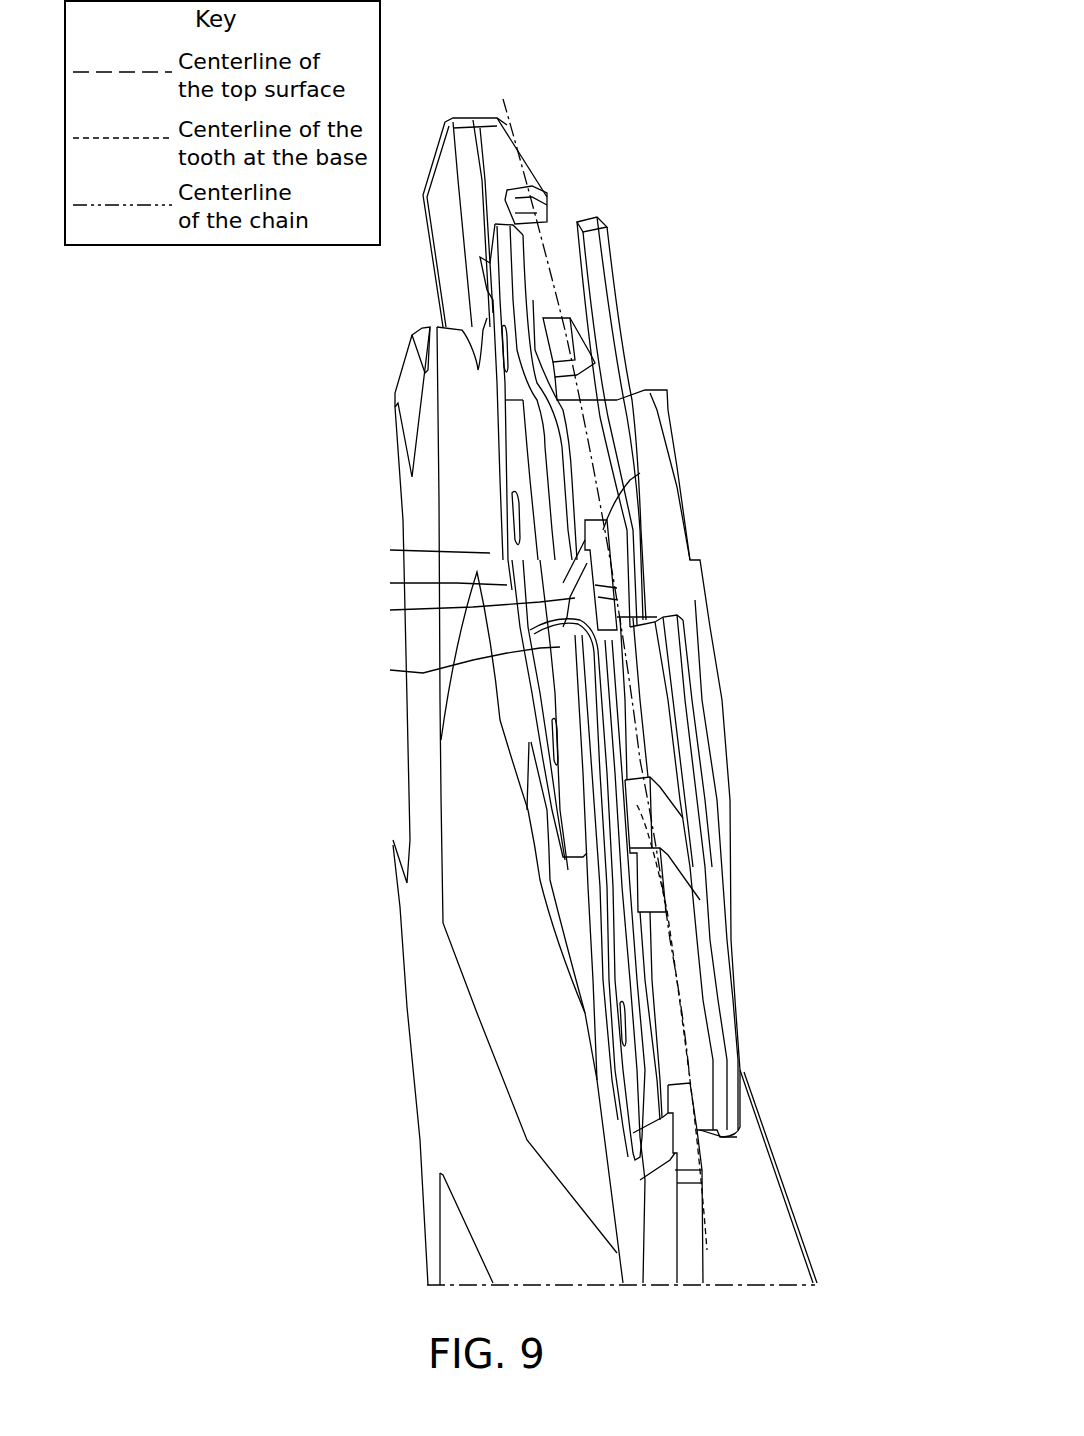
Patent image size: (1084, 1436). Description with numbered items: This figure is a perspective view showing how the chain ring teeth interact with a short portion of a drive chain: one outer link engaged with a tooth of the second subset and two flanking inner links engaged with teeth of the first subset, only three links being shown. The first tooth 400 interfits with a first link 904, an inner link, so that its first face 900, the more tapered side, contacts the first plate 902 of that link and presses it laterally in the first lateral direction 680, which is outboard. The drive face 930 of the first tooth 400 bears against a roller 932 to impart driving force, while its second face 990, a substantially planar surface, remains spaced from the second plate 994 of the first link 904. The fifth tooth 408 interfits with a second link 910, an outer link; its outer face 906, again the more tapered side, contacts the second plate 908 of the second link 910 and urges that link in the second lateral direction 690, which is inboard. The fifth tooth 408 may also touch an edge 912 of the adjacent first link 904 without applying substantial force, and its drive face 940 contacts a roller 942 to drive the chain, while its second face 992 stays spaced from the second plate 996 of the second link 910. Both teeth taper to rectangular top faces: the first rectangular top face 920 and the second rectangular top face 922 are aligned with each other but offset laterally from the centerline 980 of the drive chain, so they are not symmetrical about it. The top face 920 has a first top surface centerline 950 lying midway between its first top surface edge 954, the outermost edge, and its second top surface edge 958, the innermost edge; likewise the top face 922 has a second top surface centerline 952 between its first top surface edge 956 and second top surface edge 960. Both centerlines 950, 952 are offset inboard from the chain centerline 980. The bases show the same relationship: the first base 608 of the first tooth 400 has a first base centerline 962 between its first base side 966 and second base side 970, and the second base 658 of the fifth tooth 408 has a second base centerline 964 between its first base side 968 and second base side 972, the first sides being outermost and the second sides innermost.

The centerline of the drive chain 980 is at (515, 118).
The drive face of the fifth tooth 940 is at (603, 520).
The roller 942 is at (603, 425).
The second plate of the second link 996 is at (658, 420).
The second rectangular top face 922 is at (605, 517).
The first top surface edge 956 is at (613, 538).
The second face of the fifth tooth 992 is at (610, 530).
The fifth tooth 408 is at (625, 542).
The first base side 968 is at (625, 557).
The roller 932 is at (647, 667).
The drive face of the first tooth 930 is at (658, 774).
The first top surface edge 954 is at (660, 793).
The first tooth 400 is at (675, 820).
The first base side 966 is at (670, 855).
The first face of the first tooth 900 is at (663, 885).
The first base centerline 962 is at (605, 900).
The first plate of the first link 902 is at (717, 918).
The base of the first tooth 608 is at (680, 913).
The first link 904 is at (767, 996).
The first lateral direction 680 is at (940, 925).
The second lateral direction 690 is at (325, 925).
The second base centerline 964 is at (590, 520).
The second top surface centerline 952 is at (595, 550).
The second top surface edge 960 is at (597, 545).
The outer face of the fifth tooth 906 is at (567, 558).
The second base side 972 is at (560, 592).
The edge of the adjacent first link 912 is at (560, 600).
The second plate of the second link 908 is at (563, 648).
The base of the fifth tooth 658 is at (613, 641).
The second link 910 is at (542, 746).
The first top surface centerline 950 is at (637, 805).
The first rectangular top face 920 is at (618, 840).
The second face of the first tooth 990 is at (630, 855).
The second top surface edge 958 is at (630, 882).
The second base side 970 is at (643, 880).
The second plate of the first link 994 is at (617, 977).